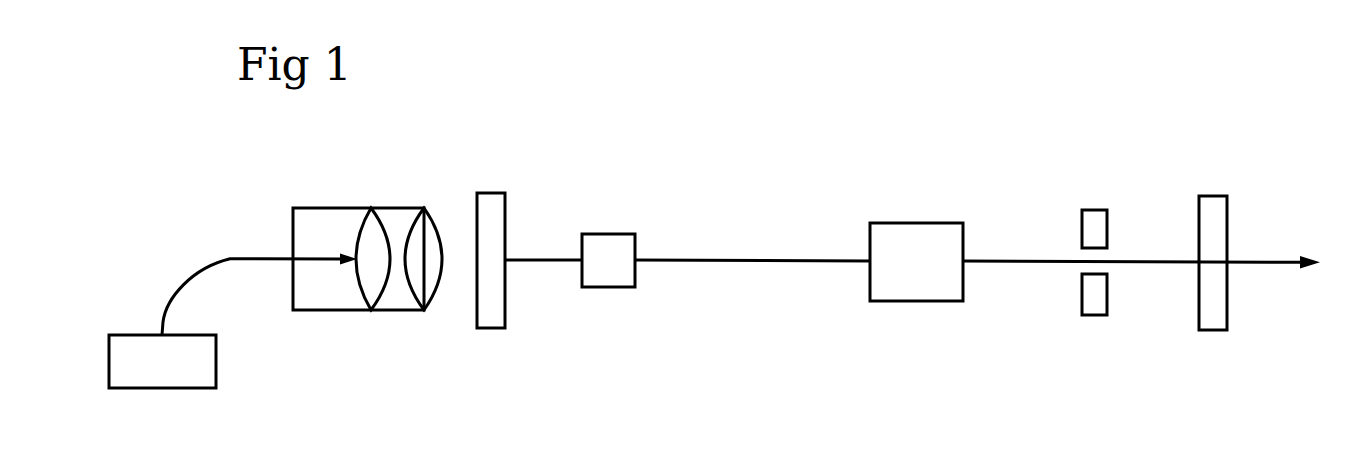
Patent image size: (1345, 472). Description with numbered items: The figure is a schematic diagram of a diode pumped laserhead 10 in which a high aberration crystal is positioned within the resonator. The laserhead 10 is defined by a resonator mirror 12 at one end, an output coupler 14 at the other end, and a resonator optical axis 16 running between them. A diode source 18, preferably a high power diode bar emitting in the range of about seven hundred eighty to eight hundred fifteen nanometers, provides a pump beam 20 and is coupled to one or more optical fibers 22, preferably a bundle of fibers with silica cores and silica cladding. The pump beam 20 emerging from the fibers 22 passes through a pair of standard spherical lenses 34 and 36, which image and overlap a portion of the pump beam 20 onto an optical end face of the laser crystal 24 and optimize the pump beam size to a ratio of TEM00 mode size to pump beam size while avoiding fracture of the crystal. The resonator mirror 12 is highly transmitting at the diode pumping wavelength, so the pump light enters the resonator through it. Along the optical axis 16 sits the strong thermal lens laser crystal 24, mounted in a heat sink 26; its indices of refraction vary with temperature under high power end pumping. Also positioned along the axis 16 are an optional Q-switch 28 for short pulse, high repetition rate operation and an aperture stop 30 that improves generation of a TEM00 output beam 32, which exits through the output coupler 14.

The diode pumped laserhead 10 is at (822, 100).
The resonator mirror 12 is at (492, 208).
The output coupler 14 is at (1213, 210).
The resonator optical axis 16 is at (753, 259).
The diode source 18 is at (172, 380).
The pump beam 20 is at (332, 258).
The optical fibers 22 is at (200, 268).
The laser crystal 24 is at (610, 272).
The heat sink 26 is at (607, 207).
The Q-switch 28 is at (925, 237).
The aperture stop 30 is at (1095, 300).
The output beam 32 is at (1267, 264).
The spherical lens 34 is at (372, 282).
The spherical lens 36 is at (425, 283).